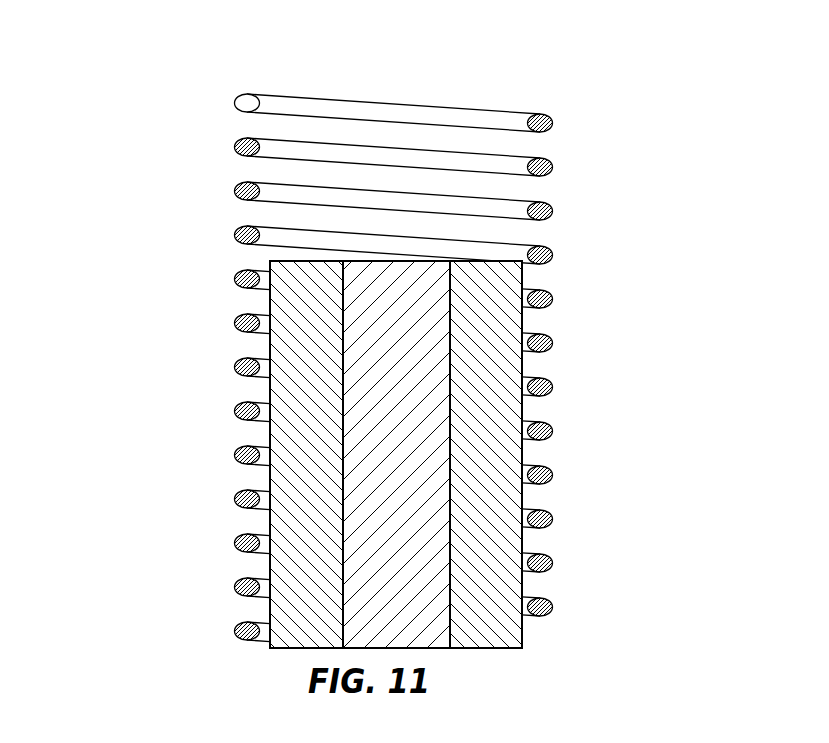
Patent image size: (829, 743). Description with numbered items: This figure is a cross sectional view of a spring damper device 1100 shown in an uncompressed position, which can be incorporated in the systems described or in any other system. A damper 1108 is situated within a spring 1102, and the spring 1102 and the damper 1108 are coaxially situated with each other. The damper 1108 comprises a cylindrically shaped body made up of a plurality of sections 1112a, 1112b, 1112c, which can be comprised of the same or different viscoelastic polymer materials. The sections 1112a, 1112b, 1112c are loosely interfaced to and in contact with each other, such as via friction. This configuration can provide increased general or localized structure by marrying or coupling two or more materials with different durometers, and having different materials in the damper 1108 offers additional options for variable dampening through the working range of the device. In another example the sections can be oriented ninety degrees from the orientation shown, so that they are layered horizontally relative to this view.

The spring damper device 1100 is at (212, 117).
The damper 1108 is at (456, 228).
The spring 1102 is at (238, 241).
The section 1112a is at (298, 642).
The section 1112b is at (438, 635).
The section 1112c is at (500, 480).